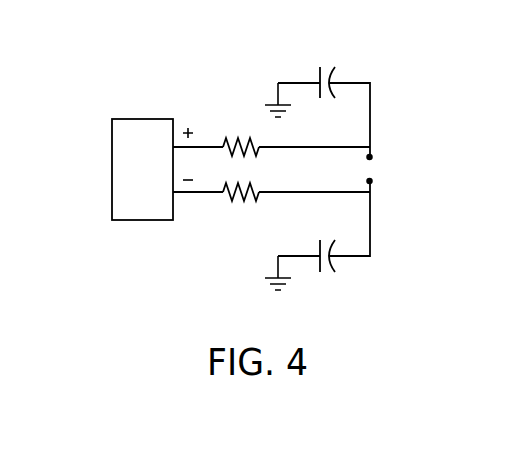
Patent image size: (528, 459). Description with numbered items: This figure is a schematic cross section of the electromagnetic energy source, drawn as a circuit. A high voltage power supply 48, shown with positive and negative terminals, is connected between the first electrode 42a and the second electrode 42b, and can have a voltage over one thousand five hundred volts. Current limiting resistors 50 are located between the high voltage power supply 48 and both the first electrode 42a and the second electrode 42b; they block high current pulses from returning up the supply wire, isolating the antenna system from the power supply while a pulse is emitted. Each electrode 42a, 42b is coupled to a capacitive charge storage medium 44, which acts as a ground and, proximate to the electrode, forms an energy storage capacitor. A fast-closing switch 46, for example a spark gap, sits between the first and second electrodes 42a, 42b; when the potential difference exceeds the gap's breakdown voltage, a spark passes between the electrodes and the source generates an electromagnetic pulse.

The high voltage power supply 48 is at (138, 118).
The current limiting resistors 50 is at (233, 196).
The capacitive charge storage medium 44 is at (328, 67).
The second electrode 42b is at (370, 113).
The first electrode 42a is at (370, 221).
The fast-closing switch 46 is at (372, 165).